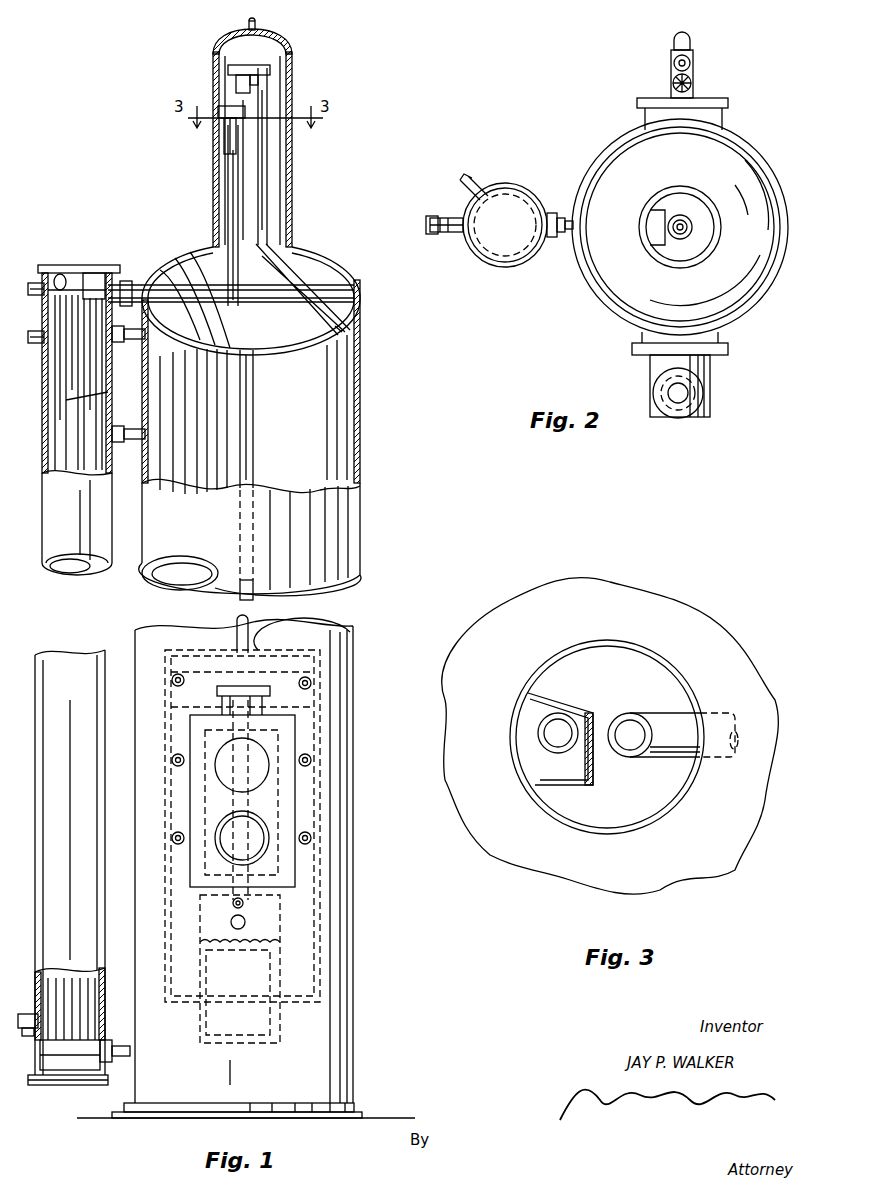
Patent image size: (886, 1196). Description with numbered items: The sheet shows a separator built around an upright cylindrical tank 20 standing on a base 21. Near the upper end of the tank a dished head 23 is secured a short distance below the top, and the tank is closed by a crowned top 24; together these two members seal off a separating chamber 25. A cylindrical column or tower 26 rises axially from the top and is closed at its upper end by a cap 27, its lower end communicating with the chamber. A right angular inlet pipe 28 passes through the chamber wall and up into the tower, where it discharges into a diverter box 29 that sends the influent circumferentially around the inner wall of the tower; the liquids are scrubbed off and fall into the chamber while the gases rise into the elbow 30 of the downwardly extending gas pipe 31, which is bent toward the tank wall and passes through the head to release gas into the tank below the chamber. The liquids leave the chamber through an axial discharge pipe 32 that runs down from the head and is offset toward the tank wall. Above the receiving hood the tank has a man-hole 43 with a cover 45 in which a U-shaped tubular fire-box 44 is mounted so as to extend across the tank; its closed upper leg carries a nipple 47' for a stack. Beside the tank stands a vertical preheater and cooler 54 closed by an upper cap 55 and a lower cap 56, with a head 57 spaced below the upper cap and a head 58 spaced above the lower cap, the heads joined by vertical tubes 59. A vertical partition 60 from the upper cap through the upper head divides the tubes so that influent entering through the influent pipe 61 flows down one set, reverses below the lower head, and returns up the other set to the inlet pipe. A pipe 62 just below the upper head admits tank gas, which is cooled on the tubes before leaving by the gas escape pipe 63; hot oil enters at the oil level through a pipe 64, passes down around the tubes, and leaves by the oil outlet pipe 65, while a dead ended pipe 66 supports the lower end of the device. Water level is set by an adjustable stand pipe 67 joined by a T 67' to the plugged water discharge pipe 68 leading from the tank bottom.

In FIG. 1, the upright cylindrical tank 20 is at (360, 385).
In FIG. 2, the upright cylindrical tank 20 is at (775, 175).
In FIG. 1, the base 21 is at (352, 1110).
In FIG. 1, the dished head 23 is at (290, 348).
In FIG. 1, the crowned top 24 is at (330, 256).
In FIG. 2, the crowned top 24 is at (752, 288).
In FIG. 3, the crowned top 24 is at (720, 852).
In FIG. 1, the separating chamber 25 is at (335, 295).
In FIG. 1, the cylindrical column or tower 26 is at (292, 165).
In FIG. 2, the cylindrical column or tower 26 is at (700, 195).
In FIG. 3, the cylindrical column or tower 26 is at (672, 806).
In FIG. 1, the cap 27 is at (283, 40).
In FIG. 2, the cap 27 is at (706, 230).
In FIG. 1, the right angular inlet pipe 28 is at (228, 220).
In FIG. 2, the right angular inlet pipe 28 is at (560, 240).
In FIG. 3, the right angular inlet pipe 28 is at (548, 748).
In FIG. 1, the diverter box 29 is at (222, 128).
In FIG. 3, the diverter box 29 is at (572, 700).
In FIG. 1, the elbow 30 is at (265, 76).
In FIG. 1, the gas pipe 31 is at (262, 207).
In FIG. 3, the gas pipe 31 is at (662, 722).
In FIG. 1, the axial discharge pipe 32 is at (253, 437).
In FIG. 2, the man-hole 43 is at (648, 333).
In FIG. 1, the U-shaped tubular fire-box 44 is at (253, 775).
In FIG. 2, the U-shaped tubular fire-box 44 is at (712, 370).
In FIG. 1, the cover 45 is at (290, 865).
In FIG. 2, the cover 45 is at (640, 356).
In FIG. 1, the nipple 47' is at (306, 699).
In FIG. 2, the nipple 47' is at (709, 393).
In FIG. 1, the preheater and cooler 54 is at (78, 585).
In FIG. 1, the upper cap 55 is at (75, 270).
In FIG. 2, the upper cap 55 is at (505, 235).
In FIG. 1, the lower cap 56 is at (60, 1085).
In FIG. 1, the upper head 57 is at (58, 275).
In FIG. 1, the lower head 58 is at (70, 1055).
In FIG. 1, the vertical tubes 59 is at (72, 400).
In FIG. 1, the vertical partition 60 is at (94, 286).
In FIG. 1, the influent pipe 61 is at (33, 298).
In FIG. 2, the influent pipe 61 is at (478, 183).
In FIG. 1, the gas connecting pipe 62 is at (125, 342).
In FIG. 1, the gas escape pipe 63 is at (35, 346).
In FIG. 2, the gas escape pipe 63 is at (455, 234).
In FIG. 1, the oil pipe 64 is at (128, 445).
In FIG. 1, the oil outlet pipe 65 is at (28, 1036).
In FIG. 2, the oil outlet pipe 65 is at (434, 236).
In FIG. 1, the dead ended pipe 66 is at (120, 1060).
In FIG. 2, the adjustable stand pipe 67 is at (708, 74).
In FIG. 2, the T 67' is at (707, 44).
In FIG. 2, the water discharge pipe 68 is at (668, 97).